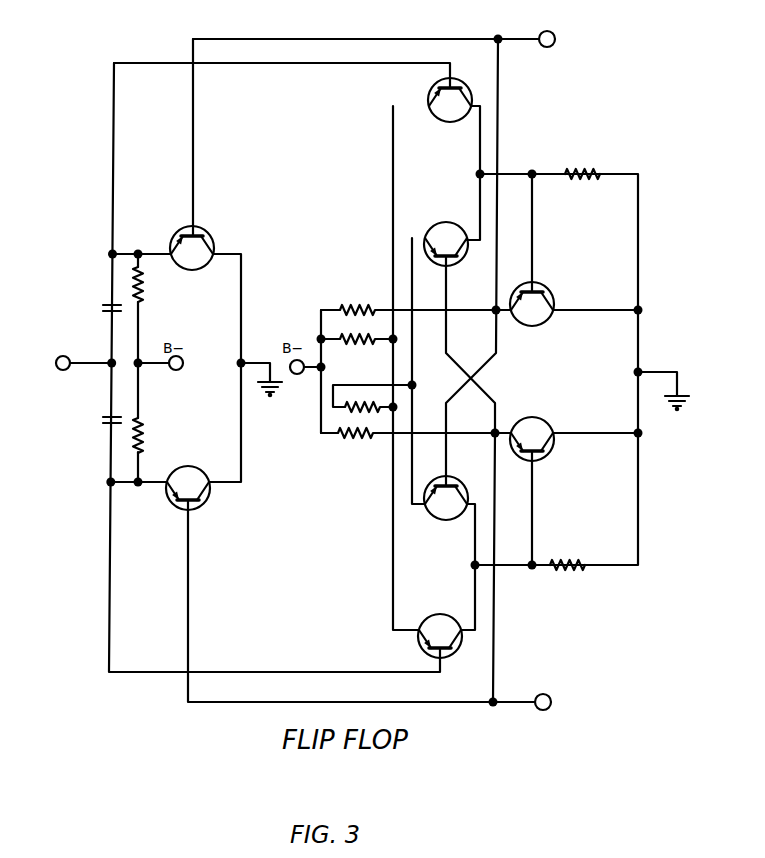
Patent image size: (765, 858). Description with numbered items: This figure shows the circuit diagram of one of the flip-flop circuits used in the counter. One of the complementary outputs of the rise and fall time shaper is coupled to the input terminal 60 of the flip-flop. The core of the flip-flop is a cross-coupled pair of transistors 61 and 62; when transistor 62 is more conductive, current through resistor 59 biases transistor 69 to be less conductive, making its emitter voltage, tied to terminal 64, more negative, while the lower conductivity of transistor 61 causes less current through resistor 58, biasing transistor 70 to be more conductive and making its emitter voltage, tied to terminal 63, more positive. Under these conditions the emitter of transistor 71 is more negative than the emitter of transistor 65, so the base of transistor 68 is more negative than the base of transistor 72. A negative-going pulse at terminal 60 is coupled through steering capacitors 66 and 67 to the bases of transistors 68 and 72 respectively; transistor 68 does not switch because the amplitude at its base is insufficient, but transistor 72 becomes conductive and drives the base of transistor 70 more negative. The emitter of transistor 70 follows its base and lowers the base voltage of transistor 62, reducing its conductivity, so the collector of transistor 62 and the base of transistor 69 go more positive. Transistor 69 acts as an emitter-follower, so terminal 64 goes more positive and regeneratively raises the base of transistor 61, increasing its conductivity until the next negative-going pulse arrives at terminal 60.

The resistor 58 is at (580, 171).
The resistor 59 is at (563, 573).
The input terminal 60 is at (62, 355).
The transistor 61 is at (445, 223).
The transistor 62 is at (436, 519).
The terminal 63 is at (555, 37).
The terminal 64 is at (550, 695).
The transistor 65 is at (207, 232).
The steering capacitor 66 is at (105, 306).
The steering capacitor 67 is at (108, 418).
The transistor 68 is at (418, 646).
The transistor 69 is at (548, 452).
The transistor 70 is at (575, 267).
The transistor 71 is at (211, 498).
The transistor 72 is at (426, 88).